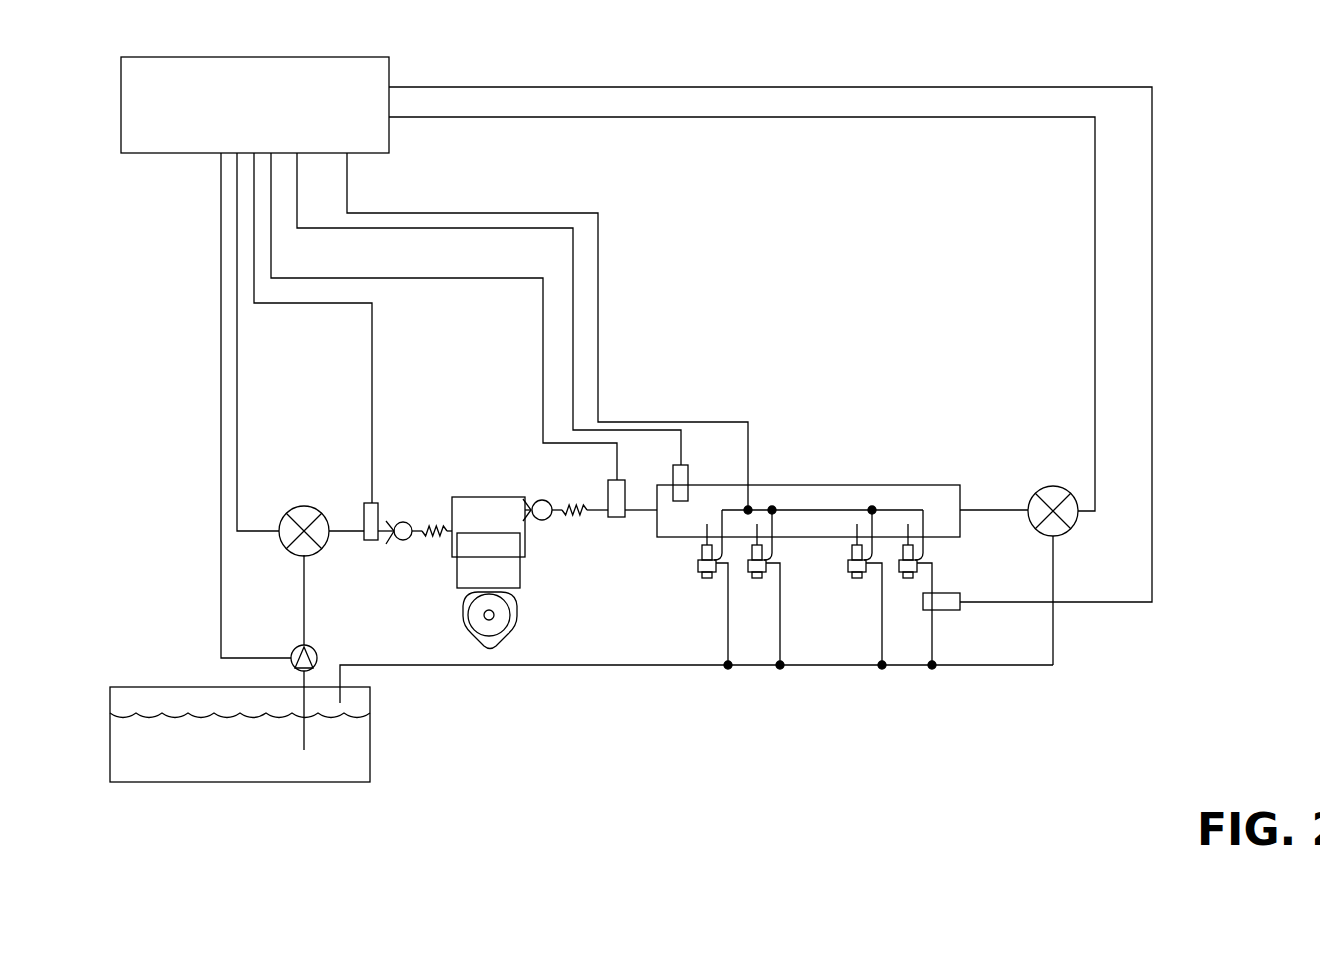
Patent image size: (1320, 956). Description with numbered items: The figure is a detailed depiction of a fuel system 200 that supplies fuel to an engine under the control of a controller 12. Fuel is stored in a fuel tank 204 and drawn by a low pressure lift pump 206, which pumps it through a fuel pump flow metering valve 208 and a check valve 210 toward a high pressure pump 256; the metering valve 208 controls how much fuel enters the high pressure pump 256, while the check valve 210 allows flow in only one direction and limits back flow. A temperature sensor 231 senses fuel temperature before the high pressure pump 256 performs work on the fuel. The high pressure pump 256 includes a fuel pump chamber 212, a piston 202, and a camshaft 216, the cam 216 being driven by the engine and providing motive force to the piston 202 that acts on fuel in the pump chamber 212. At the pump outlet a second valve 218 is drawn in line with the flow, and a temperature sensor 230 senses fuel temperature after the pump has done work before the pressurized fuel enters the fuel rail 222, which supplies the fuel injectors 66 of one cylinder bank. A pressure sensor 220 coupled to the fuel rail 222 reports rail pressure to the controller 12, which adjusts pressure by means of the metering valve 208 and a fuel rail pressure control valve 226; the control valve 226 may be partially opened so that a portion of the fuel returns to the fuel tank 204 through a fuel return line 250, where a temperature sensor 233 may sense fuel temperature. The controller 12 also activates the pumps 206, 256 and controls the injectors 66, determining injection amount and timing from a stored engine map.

The controller 12 is at (244, 113).
The fuel system 200 is at (1190, 56).
The piston 202 is at (475, 571).
The fuel tank 204 is at (371, 771).
The low pressure pump 206 is at (291, 661).
The fuel pump flow metering valve 208 is at (290, 552).
The check valve 210 is at (408, 522).
The fuel pump chamber 212 is at (475, 527).
The camshaft 216 is at (462, 618).
The check valve 218 is at (548, 500).
The pressure sensor 220 is at (690, 470).
The fuel rail 222 is at (830, 485).
The fuel rail pressure control valve 226 is at (1051, 487).
The temperature sensor 230 is at (613, 518).
The temperature sensor 231 is at (370, 543).
The temperature sensor 233 is at (955, 612).
The fuel return line 250 is at (936, 580).
The high pressure pump 256 is at (477, 474).
The fuel injectors 66 is at (698, 570).